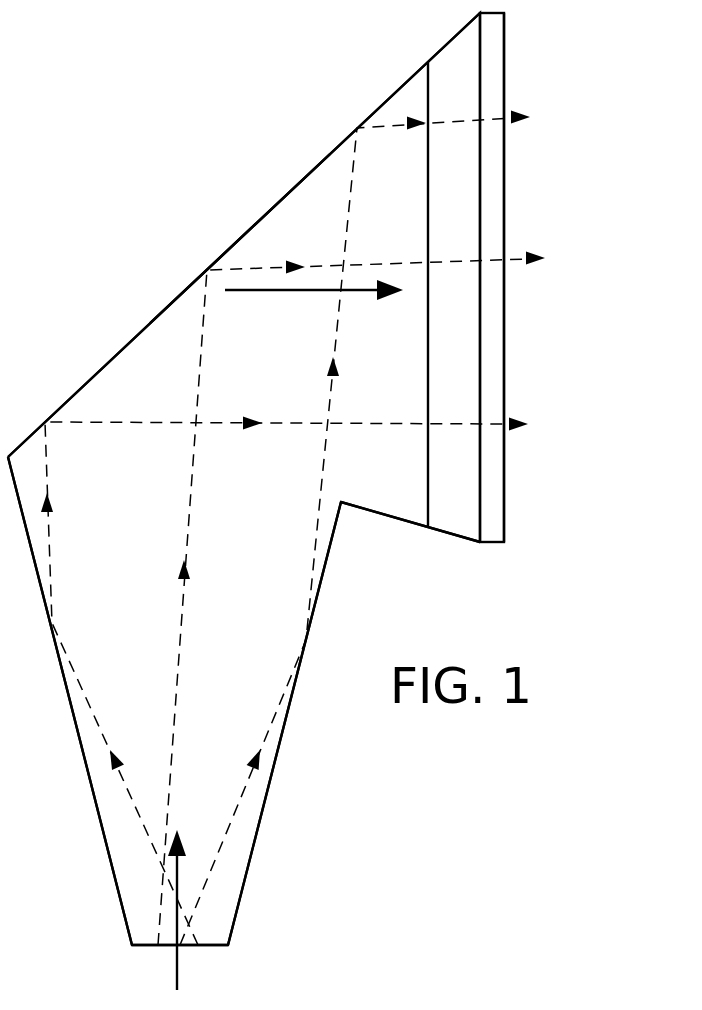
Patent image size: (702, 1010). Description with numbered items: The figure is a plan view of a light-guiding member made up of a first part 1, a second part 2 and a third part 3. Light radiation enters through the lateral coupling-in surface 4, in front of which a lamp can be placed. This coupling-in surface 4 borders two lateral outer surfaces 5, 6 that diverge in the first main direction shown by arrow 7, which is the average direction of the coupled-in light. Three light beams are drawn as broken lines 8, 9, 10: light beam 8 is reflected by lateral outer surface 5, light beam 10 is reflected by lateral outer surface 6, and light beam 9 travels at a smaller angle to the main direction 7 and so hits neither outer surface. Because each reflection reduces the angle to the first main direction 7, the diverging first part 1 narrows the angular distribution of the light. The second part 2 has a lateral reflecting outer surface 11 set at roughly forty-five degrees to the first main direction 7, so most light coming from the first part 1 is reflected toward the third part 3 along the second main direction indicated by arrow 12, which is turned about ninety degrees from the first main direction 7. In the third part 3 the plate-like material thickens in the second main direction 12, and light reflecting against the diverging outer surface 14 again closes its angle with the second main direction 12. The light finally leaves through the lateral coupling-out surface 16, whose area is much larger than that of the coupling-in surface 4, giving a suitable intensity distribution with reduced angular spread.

The first part 1 is at (100, 667).
The second part 2 is at (240, 338).
The third part 3 is at (493, 62).
The lateral coupling-in surface 4 is at (148, 947).
The lateral outer surface 5 is at (93, 795).
The lateral outer surface 6 is at (270, 787).
The first main direction 7 is at (177, 967).
The light beam 8 is at (138, 812).
The light beam 9 is at (187, 525).
The light beam 10 is at (278, 700).
The lateral reflecting outer surface 11 is at (235, 241).
The second main direction 12 is at (272, 290).
The diverging outer surface 14 is at (455, 513).
The lateral coupling-out surface 16 is at (503, 177).